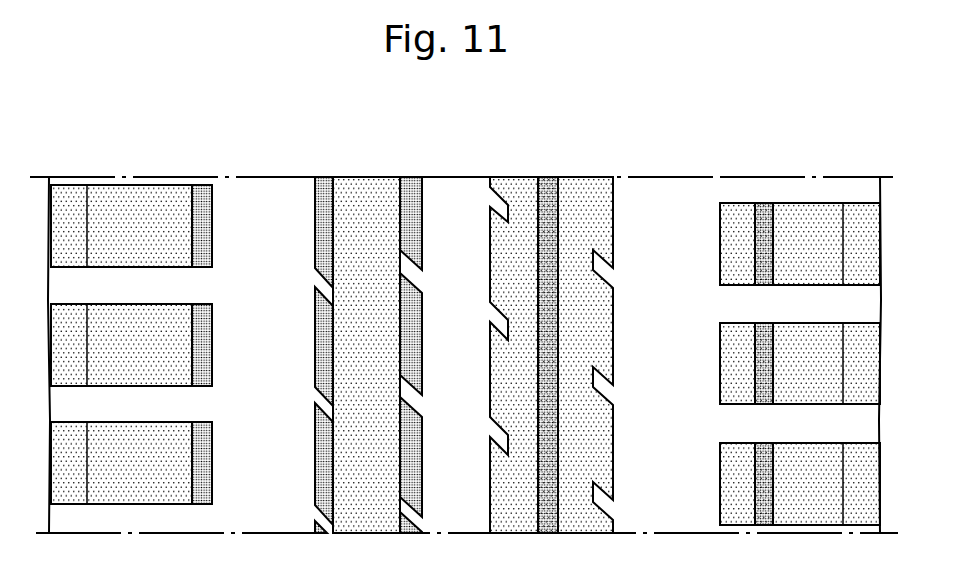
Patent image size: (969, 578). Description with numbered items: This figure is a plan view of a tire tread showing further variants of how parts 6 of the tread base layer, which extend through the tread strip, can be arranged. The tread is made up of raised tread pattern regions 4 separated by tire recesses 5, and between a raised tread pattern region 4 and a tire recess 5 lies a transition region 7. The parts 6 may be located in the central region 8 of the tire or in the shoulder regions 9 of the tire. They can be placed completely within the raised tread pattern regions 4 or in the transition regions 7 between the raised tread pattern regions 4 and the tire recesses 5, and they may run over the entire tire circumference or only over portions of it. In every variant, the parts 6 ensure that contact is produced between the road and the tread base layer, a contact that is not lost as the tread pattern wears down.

The raised tread pattern regions 4 is at (127, 198).
The tire recesses 5 is at (278, 510).
The parts of the tread base layer 6 is at (315, 208).
The transition regions 7 is at (191, 516).
The central region 8 is at (461, 166).
The shoulder regions 9 is at (192, 166).